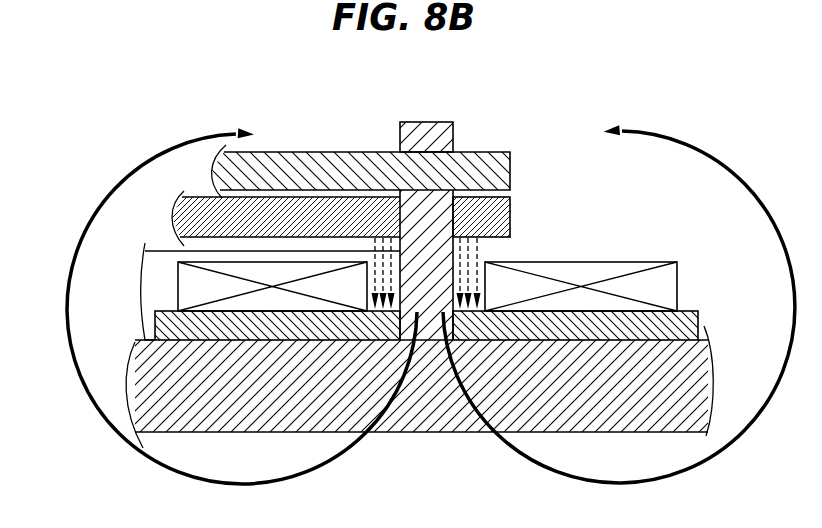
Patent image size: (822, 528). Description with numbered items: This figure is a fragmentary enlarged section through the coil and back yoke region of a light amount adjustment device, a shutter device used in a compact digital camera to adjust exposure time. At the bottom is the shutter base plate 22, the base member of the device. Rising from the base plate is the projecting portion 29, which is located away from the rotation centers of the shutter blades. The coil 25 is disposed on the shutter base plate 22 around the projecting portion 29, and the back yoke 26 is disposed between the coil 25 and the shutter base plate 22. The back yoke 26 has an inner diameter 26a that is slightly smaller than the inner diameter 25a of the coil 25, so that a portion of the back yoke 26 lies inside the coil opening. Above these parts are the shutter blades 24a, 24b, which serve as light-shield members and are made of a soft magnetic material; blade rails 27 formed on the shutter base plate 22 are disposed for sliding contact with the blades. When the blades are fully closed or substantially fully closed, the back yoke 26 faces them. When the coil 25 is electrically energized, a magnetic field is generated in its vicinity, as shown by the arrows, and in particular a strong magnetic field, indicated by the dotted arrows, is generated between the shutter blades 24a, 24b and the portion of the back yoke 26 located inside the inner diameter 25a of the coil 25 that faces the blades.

The shutter base plate 22 is at (170, 418).
The shutter blade 24a is at (298, 166).
The shutter blade 24b is at (195, 217).
The coil 25 is at (589, 272).
The inner diameter of the coil 25a is at (485, 273).
The back yoke 26 is at (640, 308).
The inner diameter of the back yoke 26a is at (418, 312).
The blade rail 27 is at (160, 280).
The projecting portion 29 is at (432, 136).